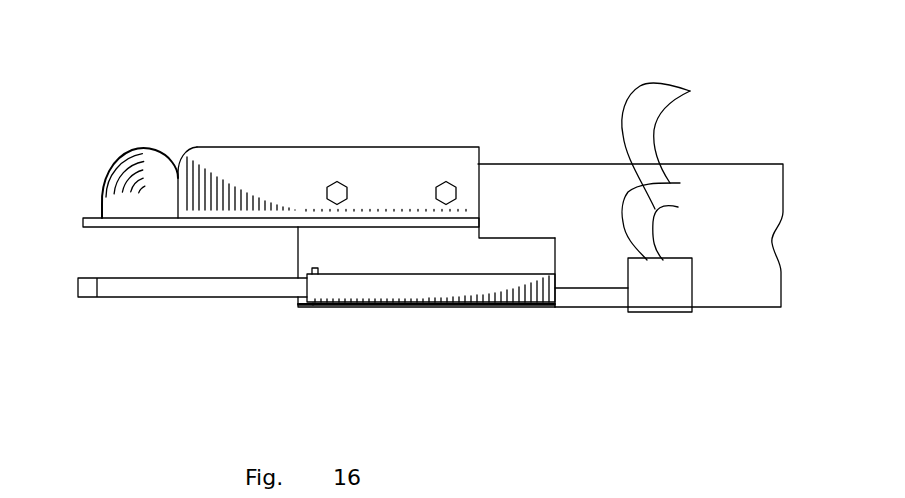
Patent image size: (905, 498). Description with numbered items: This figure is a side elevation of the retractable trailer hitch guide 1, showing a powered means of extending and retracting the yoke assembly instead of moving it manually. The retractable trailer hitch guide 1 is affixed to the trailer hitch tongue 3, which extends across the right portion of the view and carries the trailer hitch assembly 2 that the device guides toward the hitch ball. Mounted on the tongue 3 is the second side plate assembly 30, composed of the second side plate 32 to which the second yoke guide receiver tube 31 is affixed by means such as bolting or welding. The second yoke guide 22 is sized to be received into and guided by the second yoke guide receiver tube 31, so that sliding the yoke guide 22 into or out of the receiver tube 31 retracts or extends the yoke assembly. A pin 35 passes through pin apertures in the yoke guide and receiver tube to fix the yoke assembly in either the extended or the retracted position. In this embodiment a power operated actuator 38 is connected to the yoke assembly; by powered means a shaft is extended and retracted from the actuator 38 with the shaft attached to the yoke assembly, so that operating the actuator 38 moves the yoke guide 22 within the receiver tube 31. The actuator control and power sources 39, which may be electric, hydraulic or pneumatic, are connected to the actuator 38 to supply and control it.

The retractable trailer hitch guide 1 is at (230, 352).
The trailer hitch assembly 2 is at (270, 110).
The trailer hitch tongue 3 is at (510, 183).
The second yoke guide 22 is at (113, 290).
The second side plate assembly 30 is at (407, 322).
The second yoke guide receiver tube 31 is at (368, 290).
The second side plate 32 is at (523, 262).
The pin 35 is at (317, 270).
The power operated actuator 38 is at (647, 298).
The actuator control and power sources 39 is at (690, 91).